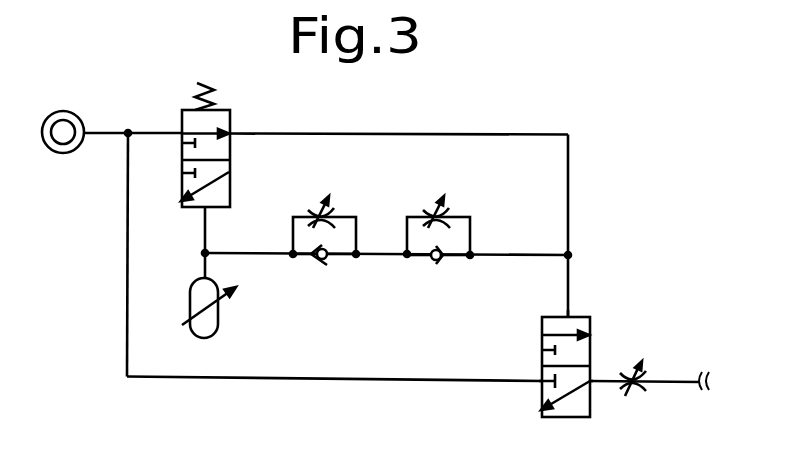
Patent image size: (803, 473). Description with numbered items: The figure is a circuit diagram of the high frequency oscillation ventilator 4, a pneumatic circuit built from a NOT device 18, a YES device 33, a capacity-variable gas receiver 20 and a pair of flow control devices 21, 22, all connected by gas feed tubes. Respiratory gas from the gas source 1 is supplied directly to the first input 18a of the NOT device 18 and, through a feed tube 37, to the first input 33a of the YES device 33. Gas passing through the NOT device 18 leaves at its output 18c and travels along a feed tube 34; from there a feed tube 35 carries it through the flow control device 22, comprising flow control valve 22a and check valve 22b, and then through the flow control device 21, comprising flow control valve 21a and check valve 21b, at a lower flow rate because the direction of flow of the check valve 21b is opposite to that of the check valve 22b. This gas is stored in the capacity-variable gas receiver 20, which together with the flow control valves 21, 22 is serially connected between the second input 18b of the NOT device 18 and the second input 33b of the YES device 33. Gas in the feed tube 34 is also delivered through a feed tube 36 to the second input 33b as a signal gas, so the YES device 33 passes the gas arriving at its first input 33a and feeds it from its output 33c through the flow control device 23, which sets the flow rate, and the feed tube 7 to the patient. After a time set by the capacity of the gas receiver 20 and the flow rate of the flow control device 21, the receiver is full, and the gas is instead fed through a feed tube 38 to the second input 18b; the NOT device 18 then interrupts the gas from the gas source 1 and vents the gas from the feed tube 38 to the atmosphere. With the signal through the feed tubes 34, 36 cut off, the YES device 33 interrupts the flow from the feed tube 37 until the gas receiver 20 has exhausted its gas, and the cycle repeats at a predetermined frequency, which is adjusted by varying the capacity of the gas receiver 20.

The gas source 1 is at (66, 110).
The high frequency oscillation ventilator 4 is at (478, 118).
The feed tube 7 is at (686, 385).
The NOT device 18 is at (230, 111).
The first input of the NOT device 18a is at (182, 137).
The second input of the NOT device 18b is at (204, 210).
The output of the NOT device 18c is at (231, 137).
The capacity-variable gas receiver 20 is at (218, 325).
The flow control device 21 is at (352, 216).
The flow control valve 21a is at (316, 213).
The check valve 21b is at (323, 262).
The flow control device 22 is at (470, 216).
The flow control valve 22a is at (430, 210).
The check valve 22b is at (438, 263).
The flow control device 23 is at (647, 376).
The YES device 33 is at (590, 405).
The first input of the YES device 33a is at (541, 378).
The second input of the YES device 33b is at (567, 312).
The output of the YES device 33c is at (591, 378).
The feed tube 34 is at (568, 178).
The feed tube 35 is at (530, 254).
The feed tube 36 is at (568, 284).
The feed tube 37 is at (335, 382).
The feed tube 38 is at (206, 240).